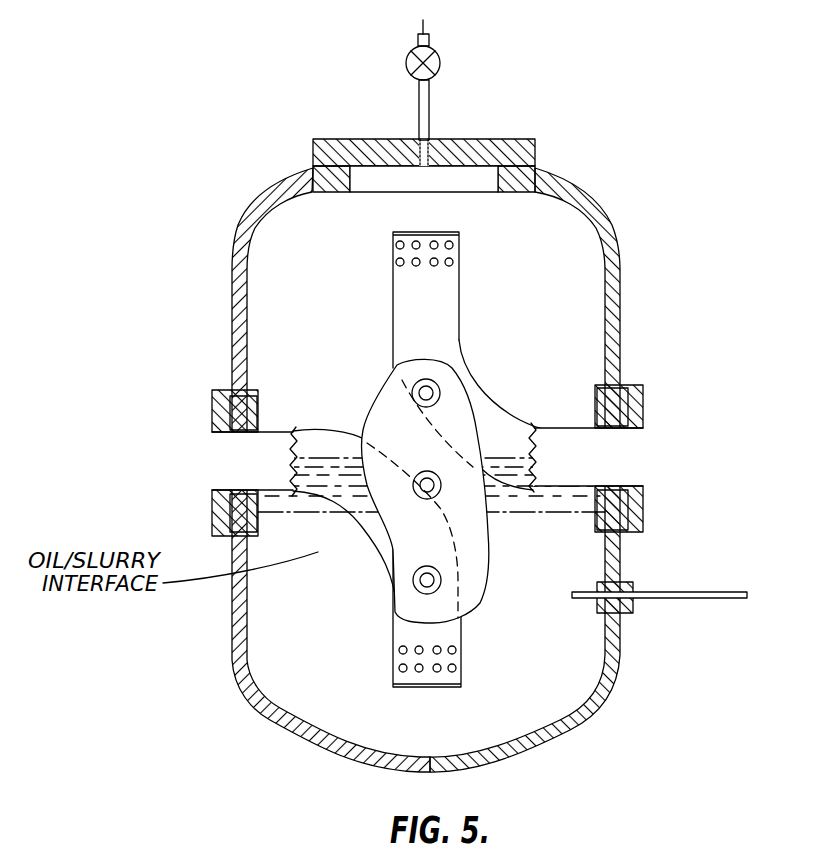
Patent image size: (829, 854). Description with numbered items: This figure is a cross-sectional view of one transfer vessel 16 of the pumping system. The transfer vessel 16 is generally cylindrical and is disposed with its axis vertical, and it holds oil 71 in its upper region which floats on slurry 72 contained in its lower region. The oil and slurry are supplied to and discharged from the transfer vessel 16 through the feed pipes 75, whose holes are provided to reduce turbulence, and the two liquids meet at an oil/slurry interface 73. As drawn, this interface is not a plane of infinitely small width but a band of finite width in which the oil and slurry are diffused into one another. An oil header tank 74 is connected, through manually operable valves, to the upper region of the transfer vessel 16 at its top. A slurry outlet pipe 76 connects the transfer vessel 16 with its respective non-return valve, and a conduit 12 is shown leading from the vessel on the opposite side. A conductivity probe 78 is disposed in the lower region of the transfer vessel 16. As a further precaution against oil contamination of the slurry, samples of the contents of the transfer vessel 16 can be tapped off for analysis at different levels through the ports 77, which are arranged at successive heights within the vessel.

The outlet conduit 12 is at (705, 456).
The transfer vessel 16 is at (326, 746).
The oil 71 is at (325, 331).
The slurry 72 is at (334, 637).
The oil/slurry interface 73 is at (310, 503).
The oil header tank 74 is at (425, 28).
The feed pipe 75 is at (453, 254).
The slurry outlet pipe 76 is at (246, 460).
The port 77 is at (426, 379).
The conductivity probe 78 is at (697, 592).